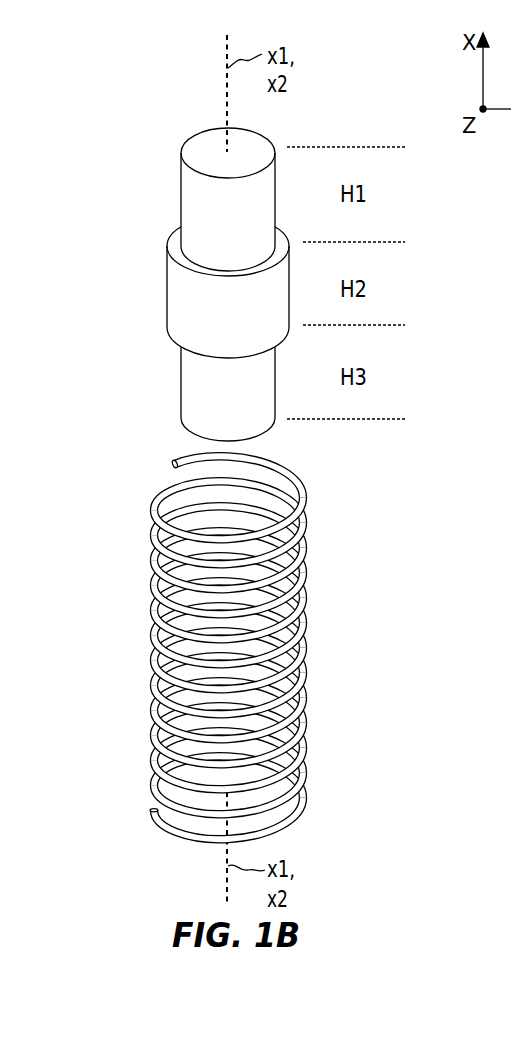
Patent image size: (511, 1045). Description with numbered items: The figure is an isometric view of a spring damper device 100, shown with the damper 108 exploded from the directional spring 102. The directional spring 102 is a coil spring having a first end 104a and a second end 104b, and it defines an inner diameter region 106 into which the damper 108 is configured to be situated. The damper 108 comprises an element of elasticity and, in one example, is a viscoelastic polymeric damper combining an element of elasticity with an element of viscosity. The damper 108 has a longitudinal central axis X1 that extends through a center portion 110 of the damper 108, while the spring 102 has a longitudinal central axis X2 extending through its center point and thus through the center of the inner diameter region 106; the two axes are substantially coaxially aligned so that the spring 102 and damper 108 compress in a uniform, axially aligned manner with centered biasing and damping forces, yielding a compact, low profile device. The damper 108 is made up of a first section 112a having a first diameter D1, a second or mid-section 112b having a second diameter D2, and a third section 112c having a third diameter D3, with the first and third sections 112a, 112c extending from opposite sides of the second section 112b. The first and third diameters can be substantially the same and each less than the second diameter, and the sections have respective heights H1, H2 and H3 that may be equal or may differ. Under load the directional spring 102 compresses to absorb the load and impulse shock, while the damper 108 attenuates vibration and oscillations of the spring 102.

The spring damper device 100 is at (210, 470).
The directional spring 102 is at (227, 647).
The first end 104a is at (295, 484).
The second end 104b is at (297, 803).
The inner diameter region 106 is at (210, 517).
The damper 108 is at (215, 470).
The center portion 110 is at (226, 150).
The first section 112a is at (192, 207).
The second section 112b is at (178, 292).
The third section 112c is at (190, 392).